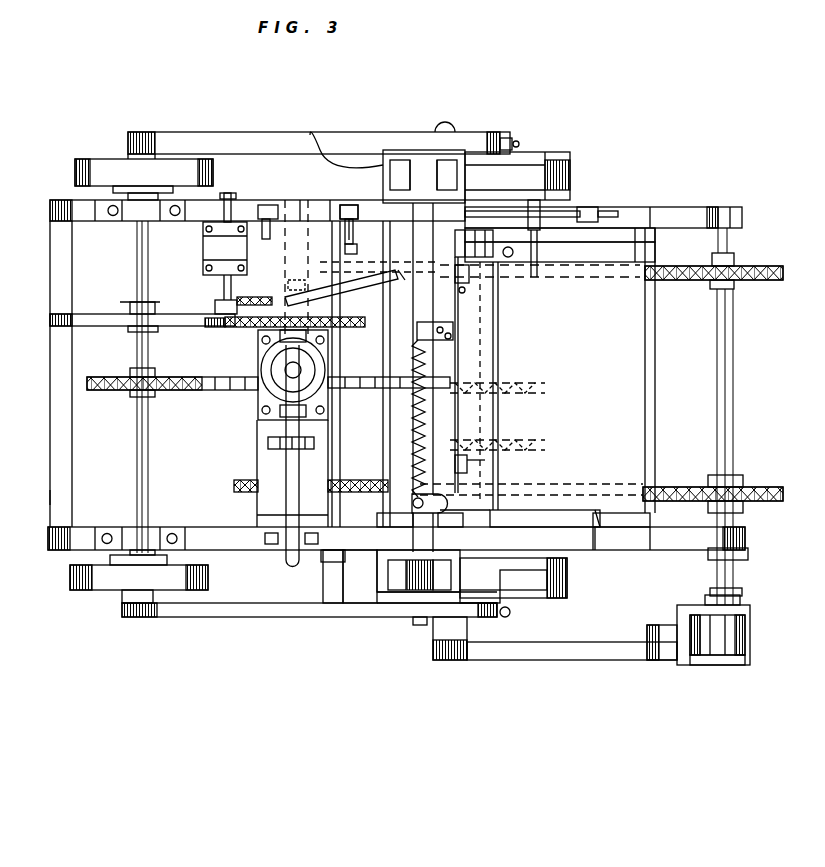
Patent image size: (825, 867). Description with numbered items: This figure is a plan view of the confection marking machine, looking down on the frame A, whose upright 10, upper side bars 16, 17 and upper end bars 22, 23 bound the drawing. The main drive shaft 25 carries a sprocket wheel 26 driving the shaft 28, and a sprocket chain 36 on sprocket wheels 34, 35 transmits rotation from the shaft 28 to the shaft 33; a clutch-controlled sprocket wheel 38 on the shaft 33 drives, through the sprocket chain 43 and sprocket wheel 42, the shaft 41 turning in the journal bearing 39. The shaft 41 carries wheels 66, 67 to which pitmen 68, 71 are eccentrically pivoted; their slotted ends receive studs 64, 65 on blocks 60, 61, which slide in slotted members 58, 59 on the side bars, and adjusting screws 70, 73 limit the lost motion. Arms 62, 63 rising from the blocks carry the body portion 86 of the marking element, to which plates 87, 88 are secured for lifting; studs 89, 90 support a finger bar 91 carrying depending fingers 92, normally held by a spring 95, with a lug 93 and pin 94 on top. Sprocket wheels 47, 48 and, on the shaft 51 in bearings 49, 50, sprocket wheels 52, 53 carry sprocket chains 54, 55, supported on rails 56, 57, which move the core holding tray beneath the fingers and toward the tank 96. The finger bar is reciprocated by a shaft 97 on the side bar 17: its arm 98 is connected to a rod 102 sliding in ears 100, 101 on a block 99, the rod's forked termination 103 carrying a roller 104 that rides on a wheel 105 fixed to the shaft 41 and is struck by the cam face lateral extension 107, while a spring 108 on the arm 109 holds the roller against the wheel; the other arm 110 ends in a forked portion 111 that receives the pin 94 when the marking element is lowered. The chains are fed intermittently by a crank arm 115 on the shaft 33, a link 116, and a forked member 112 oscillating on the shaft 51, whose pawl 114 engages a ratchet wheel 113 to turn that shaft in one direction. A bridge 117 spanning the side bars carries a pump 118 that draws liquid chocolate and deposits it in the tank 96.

The frame A is at (50, 497).
The upright 10 is at (130, 221).
The upper side bar 16 is at (58, 550).
The upper side bar 17 is at (50, 208).
The upper end bar 22 is at (50, 437).
The upper end bar 23 is at (652, 522).
The main drive shaft 25 is at (380, 338).
The sprocket wheel 26 is at (360, 303).
The shaft 28 is at (300, 200).
The shaft 33 is at (520, 520).
The sprocket wheel 34 is at (545, 444).
The sprocket wheel 35 is at (268, 443).
The sprocket chain 36 is at (350, 450).
The sprocket wheel 38 is at (545, 388).
The journal bearing 39 is at (130, 527).
The shaft 41 is at (137, 462).
The sprocket wheel 42 is at (95, 390).
The sprocket chain 43 is at (212, 390).
The sprocket wheel 47 is at (242, 492).
The sprocket wheel 48 is at (268, 205).
The journal bearing 49 is at (680, 550).
The journal bearing 50 is at (684, 207).
The shaft 51 is at (733, 405).
The sprocket wheel 52 is at (766, 501).
The sprocket wheel 53 is at (770, 266).
The sprocket chain 54 is at (660, 485).
The sprocket chain 55 is at (690, 280).
The rail 56 is at (600, 527).
The rail 57 is at (598, 235).
The slotted member 58 is at (548, 598).
The slotted member 59 is at (552, 152).
The block 60 is at (385, 603).
The block 61 is at (390, 150).
The arms 62 is at (360, 600).
The arms 63 is at (315, 140).
The stud 64 is at (418, 625).
The stud 65 is at (446, 130).
The wheel 66 is at (88, 590).
The wheel 67 is at (90, 159).
The pitman 68 is at (248, 617).
The adjusting screw 70 is at (508, 619).
The pitman 71 is at (250, 132).
The adjusting screw 73 is at (518, 138).
The body portion 86 is at (388, 570).
The plate 87 is at (377, 520).
The plate 88 is at (360, 240).
The stud 89 is at (485, 465).
The stud 90 is at (470, 290).
The finger bar 91 is at (448, 375).
The fingers 92 is at (435, 331).
The lug 93 is at (423, 377).
The pin 94 is at (490, 277).
The spring 95 is at (412, 412).
The tank 96 is at (482, 420).
The shaft 97 is at (600, 209).
The arm 98 is at (220, 212).
The block 99 is at (205, 255).
The ear 100 is at (224, 282).
The ear 101 is at (253, 290).
The rod 102 is at (215, 313).
The forked termination 103 is at (224, 314).
The roller 104 is at (240, 327).
The wheel 105 is at (50, 320).
The cam face lateral extension 107 is at (160, 300).
The spring 108 is at (364, 243).
The arm 109 is at (348, 205).
The arm 110 is at (555, 205).
The forked portion 111 is at (537, 277).
The forked member 112 is at (660, 625).
The ratchet wheel 113 is at (750, 635).
The pawl 114 is at (712, 665).
The crank arm 115 is at (445, 645).
The link 116 is at (583, 660).
The bridge 117 is at (268, 507).
The pump 118 is at (268, 405).